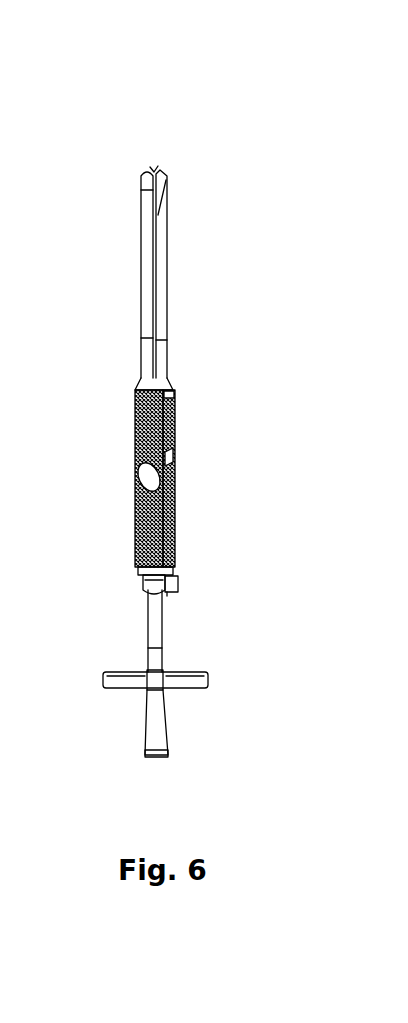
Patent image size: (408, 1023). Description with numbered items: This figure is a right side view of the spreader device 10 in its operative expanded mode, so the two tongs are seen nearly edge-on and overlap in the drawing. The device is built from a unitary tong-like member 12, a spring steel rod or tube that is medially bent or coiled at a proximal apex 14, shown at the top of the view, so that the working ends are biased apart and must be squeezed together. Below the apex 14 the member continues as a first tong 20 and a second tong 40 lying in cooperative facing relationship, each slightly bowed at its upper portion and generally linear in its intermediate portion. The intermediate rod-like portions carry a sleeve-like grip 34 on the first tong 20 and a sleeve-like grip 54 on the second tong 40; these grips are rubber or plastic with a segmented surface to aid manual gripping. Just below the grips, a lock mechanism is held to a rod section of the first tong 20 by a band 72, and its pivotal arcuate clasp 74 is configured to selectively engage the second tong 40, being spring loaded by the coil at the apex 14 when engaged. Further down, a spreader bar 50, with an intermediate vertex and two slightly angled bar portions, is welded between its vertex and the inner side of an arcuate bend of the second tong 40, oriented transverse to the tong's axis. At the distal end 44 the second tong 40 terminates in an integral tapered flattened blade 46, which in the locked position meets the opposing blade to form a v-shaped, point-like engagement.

The spreader device 10 is at (106, 90).
The unitary tong-like member 12 is at (145, 249).
The proximal apex 14 is at (154, 172).
The first tong 20 is at (163, 296).
The grip 34 is at (157, 478).
The second tong 40 is at (148, 325).
The distal end 44 is at (155, 757).
The tapered flattened blade 46 is at (153, 742).
The spreader bar 50 is at (133, 668).
The grip 54 is at (134, 440).
The band 72 is at (142, 573).
The pivotal arcuate clasp 74 is at (178, 570).